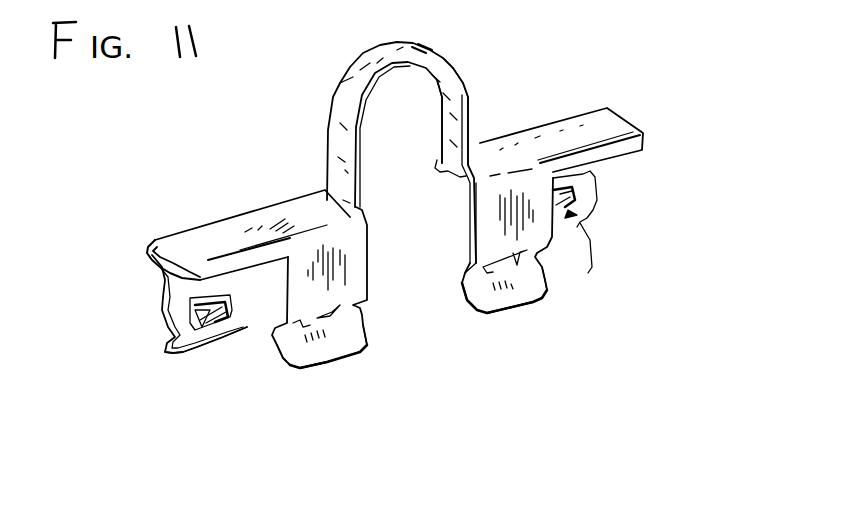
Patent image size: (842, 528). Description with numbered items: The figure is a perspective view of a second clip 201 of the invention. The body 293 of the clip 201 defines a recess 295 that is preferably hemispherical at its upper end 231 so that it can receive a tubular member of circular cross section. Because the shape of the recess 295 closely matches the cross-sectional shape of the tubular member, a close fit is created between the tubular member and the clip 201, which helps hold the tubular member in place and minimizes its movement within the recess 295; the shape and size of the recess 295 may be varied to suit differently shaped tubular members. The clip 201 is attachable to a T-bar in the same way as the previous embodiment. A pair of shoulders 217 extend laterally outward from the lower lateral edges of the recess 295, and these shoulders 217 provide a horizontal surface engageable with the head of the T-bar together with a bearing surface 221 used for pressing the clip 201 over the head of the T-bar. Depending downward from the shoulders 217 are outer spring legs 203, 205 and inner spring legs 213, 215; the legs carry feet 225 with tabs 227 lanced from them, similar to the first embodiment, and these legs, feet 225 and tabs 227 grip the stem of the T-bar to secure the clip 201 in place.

The clip 201 is at (452, 63).
The outer spring leg 203 is at (157, 258).
The outer spring leg 205 is at (583, 176).
The inner spring leg 213 is at (357, 241).
The inner spring leg 215 is at (488, 224).
The shoulder 217 is at (210, 223).
The bearing surface 221 is at (295, 210).
The foot 225 is at (298, 357).
The tab 227 is at (577, 213).
The upper end 231 is at (353, 87).
The body 293 is at (470, 100).
The recess 295 is at (452, 117).